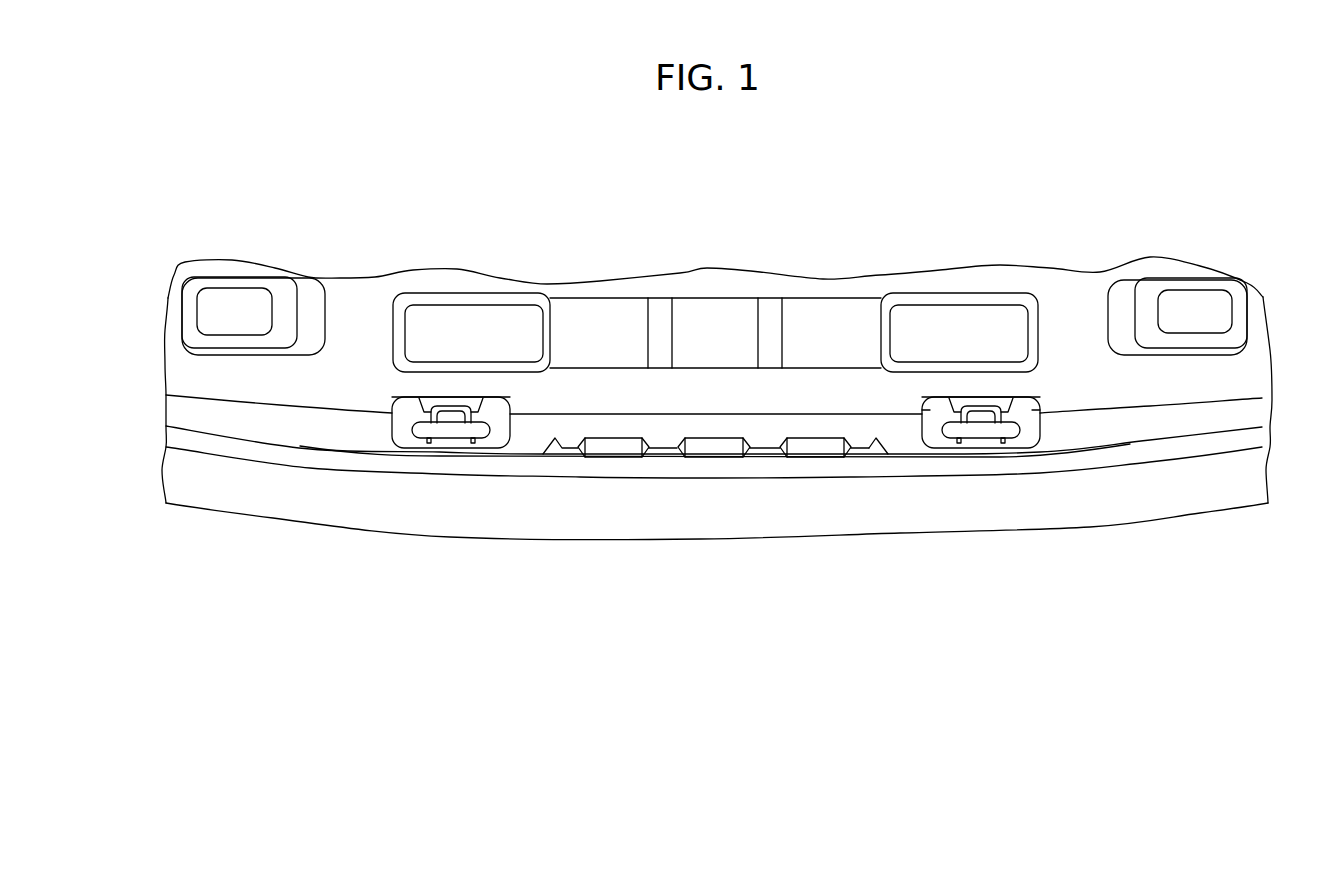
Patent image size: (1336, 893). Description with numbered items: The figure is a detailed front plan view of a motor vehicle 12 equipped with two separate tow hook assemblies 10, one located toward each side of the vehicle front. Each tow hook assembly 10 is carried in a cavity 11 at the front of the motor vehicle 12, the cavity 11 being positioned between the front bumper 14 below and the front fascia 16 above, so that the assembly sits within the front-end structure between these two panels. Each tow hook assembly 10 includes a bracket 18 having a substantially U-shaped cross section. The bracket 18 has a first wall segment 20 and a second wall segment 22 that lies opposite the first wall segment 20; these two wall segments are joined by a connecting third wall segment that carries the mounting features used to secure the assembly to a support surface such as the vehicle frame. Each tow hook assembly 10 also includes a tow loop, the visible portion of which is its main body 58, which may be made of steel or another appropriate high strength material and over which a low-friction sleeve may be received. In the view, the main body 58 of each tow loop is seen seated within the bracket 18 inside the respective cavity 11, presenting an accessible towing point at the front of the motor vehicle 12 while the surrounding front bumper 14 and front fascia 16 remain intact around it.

The tow hook assembly 10 is at (438, 460).
The cavity 11 is at (492, 412).
The motor vehicle 12 is at (377, 193).
The front bumper 14 is at (317, 503).
The front fascia 16 is at (362, 325).
The bracket 18 is at (448, 407).
The first wall segment 20 is at (940, 408).
The second wall segment 22 is at (1010, 413).
The main body 58 is at (457, 430).